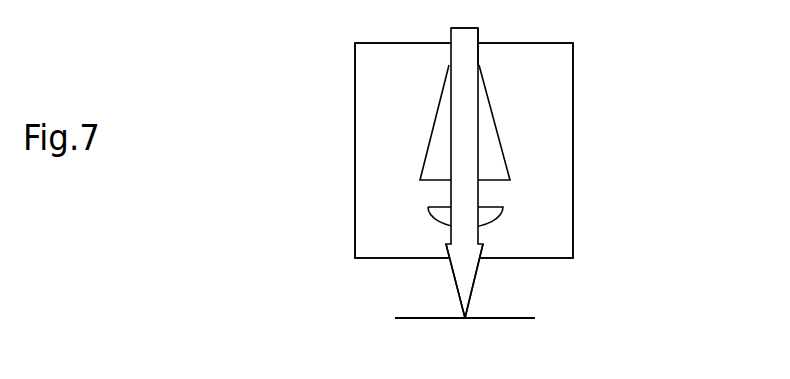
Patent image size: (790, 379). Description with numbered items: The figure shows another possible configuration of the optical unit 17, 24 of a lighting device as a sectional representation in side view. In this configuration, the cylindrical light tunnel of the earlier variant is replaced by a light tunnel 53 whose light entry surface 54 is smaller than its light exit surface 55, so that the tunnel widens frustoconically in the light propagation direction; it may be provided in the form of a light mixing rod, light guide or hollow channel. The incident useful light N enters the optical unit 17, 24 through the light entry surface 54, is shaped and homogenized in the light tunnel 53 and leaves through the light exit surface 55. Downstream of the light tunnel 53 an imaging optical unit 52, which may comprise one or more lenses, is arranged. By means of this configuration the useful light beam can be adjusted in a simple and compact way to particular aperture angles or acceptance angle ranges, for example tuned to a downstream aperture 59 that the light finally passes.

The optical unit 17 is at (596, 84).
The optical unit 24 is at (464, 150).
The imaging optical unit 52 is at (490, 217).
The light tunnel 53 is at (490, 117).
The light entry surface 54 is at (480, 64).
The light exit surface 55 is at (433, 181).
The aperture 59 is at (513, 317).
The useful light N is at (453, 279).